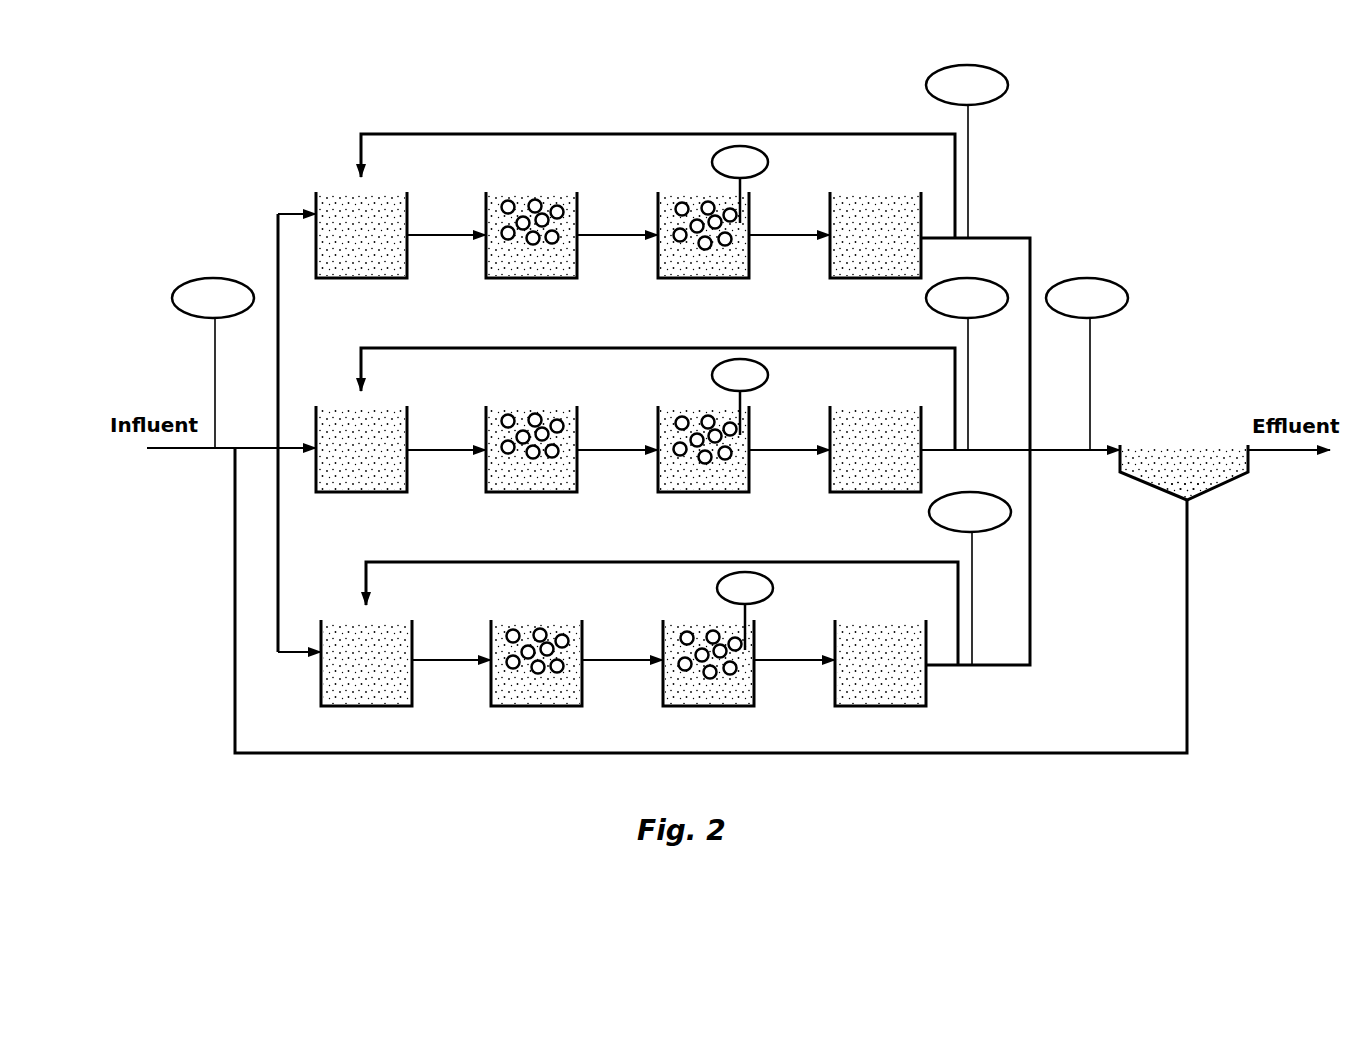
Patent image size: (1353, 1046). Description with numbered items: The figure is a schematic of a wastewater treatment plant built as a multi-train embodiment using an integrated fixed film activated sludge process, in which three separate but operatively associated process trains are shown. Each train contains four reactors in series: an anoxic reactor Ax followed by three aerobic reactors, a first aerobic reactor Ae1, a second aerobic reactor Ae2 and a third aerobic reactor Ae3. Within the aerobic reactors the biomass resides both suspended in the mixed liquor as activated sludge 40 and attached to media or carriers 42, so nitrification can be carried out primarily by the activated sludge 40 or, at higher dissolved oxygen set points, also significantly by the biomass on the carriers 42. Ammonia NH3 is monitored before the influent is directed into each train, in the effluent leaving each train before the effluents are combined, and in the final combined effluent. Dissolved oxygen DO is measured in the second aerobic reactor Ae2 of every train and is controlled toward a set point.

The activated sludge 40 is at (520, 253).
The carriers 42 is at (538, 201).
The anoxic reactor Ax is at (364, 463).
The first aerobic reactor Ae1 is at (534, 465).
The second aerobic reactor Ae2 is at (706, 465).
The third aerobic reactor Ae3 is at (878, 465).
The dissolved oxygen DO is at (742, 398).
The ammonia NH3 is at (650, 365).